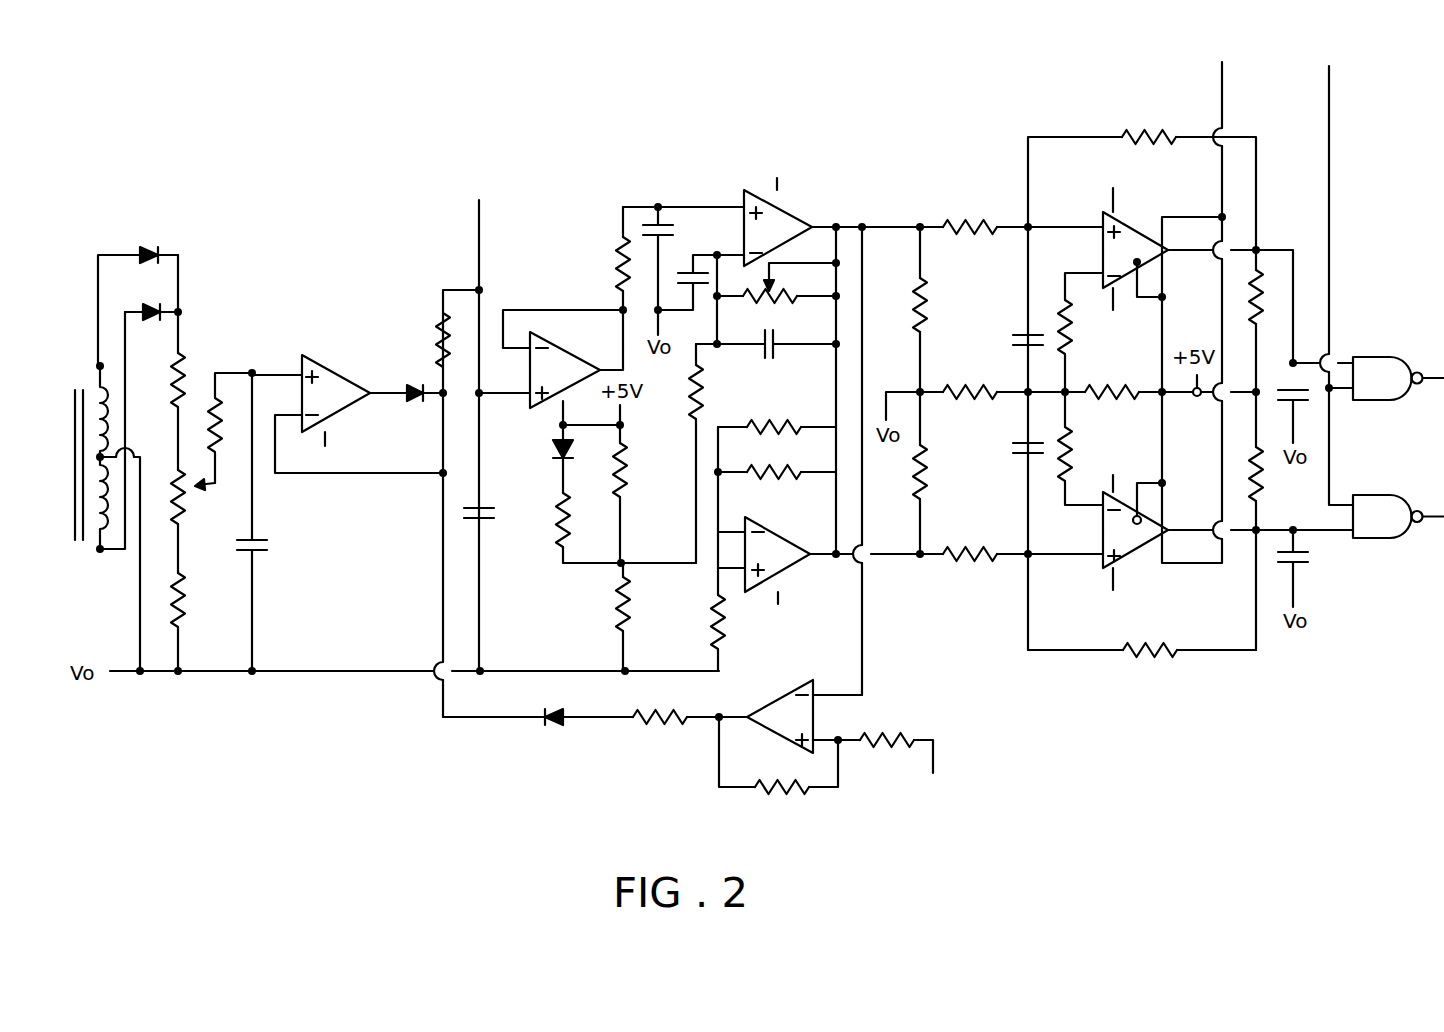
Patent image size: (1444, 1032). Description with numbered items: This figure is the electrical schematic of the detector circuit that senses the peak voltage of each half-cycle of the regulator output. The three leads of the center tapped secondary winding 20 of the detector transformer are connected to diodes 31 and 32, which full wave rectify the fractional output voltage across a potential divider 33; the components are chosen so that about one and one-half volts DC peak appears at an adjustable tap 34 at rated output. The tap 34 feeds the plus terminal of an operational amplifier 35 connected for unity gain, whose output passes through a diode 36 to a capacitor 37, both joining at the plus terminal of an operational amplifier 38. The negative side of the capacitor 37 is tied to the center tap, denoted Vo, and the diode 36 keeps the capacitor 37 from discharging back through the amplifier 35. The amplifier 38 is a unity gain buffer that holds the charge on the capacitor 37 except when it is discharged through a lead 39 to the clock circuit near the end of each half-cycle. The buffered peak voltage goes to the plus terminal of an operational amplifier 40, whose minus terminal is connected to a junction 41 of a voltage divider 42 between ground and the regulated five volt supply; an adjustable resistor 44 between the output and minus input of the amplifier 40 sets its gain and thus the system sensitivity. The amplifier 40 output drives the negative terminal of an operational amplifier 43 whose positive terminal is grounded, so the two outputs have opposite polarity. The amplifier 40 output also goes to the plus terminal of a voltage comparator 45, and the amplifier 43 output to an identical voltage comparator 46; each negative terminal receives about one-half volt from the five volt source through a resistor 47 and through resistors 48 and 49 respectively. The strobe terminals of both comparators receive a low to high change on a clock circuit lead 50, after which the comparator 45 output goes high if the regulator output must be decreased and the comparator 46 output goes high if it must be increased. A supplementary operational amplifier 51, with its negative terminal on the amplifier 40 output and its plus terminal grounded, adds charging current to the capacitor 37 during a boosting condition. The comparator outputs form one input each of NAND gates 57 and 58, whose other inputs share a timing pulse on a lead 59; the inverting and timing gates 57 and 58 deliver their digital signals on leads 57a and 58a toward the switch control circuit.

The center tapped secondary winding 20 is at (100, 584).
The diode 31 is at (148, 246).
The diode 32 is at (152, 312).
The potential divider 33 is at (176, 587).
The adjustable tap 34 is at (196, 492).
The operational amplifier 35 is at (342, 382).
The diode 36 is at (416, 386).
The capacitor 37 is at (494, 516).
The operational amplifier 38 is at (560, 352).
The lead 39 is at (479, 252).
The operational amplifier 40 is at (790, 216).
The junction 41 is at (626, 566).
The voltage divider 42 is at (676, 553).
The operational amplifier 43 is at (775, 531).
The adjustable resistor 44 is at (778, 302).
The voltage comparator 45 is at (1132, 218).
The voltage comparator 46 is at (1136, 566).
The resistor 47 is at (1106, 398).
The resistor 48 is at (1073, 332).
The resistor 49 is at (1063, 462).
The clock circuit lead 50 is at (1226, 78).
The operational amplifier 51 is at (778, 702).
The NAND gate 57 is at (1388, 356).
The lead 57a is at (1432, 386).
The NAND gate 58 is at (1388, 494).
The lead 58a is at (1432, 524).
The lead 59 is at (1329, 134).